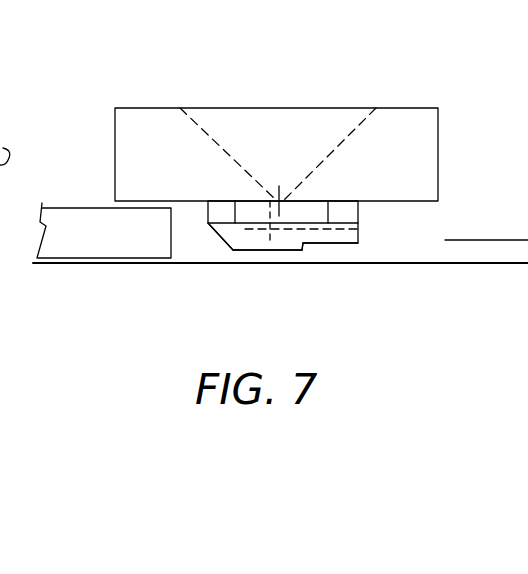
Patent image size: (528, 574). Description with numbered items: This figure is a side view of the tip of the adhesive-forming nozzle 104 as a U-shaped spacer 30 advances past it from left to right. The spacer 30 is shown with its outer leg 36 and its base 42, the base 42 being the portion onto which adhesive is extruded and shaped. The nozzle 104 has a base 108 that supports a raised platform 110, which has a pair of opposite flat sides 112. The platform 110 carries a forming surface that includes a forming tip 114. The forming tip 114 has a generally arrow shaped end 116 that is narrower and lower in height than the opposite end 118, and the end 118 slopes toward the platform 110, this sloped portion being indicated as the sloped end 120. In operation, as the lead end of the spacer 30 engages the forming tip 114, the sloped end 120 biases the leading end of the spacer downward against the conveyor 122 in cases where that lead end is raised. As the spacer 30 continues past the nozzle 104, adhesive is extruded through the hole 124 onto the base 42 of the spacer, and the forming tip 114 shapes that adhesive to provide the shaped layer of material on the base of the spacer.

The spacer 30 is at (55, 258).
The outer leg 36 is at (110, 258).
The base 42 is at (140, 258).
The nozzle 104 is at (259, 102).
The base 108 is at (403, 108).
The raised platform 110 is at (358, 215).
The flat sides 112 is at (312, 208).
The forming tip 114 is at (287, 250).
The arrow shaped end 116 is at (335, 252).
The opposite end 118 is at (250, 243).
The sloped end 120 is at (218, 237).
The conveyor 122 is at (473, 263).
The hole 124 is at (279, 186).